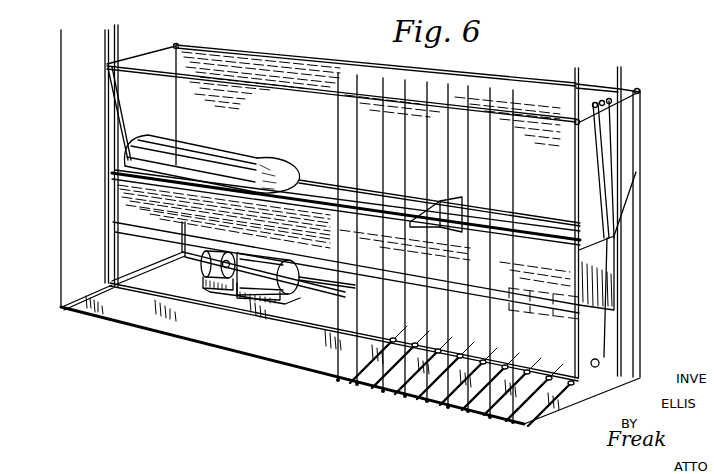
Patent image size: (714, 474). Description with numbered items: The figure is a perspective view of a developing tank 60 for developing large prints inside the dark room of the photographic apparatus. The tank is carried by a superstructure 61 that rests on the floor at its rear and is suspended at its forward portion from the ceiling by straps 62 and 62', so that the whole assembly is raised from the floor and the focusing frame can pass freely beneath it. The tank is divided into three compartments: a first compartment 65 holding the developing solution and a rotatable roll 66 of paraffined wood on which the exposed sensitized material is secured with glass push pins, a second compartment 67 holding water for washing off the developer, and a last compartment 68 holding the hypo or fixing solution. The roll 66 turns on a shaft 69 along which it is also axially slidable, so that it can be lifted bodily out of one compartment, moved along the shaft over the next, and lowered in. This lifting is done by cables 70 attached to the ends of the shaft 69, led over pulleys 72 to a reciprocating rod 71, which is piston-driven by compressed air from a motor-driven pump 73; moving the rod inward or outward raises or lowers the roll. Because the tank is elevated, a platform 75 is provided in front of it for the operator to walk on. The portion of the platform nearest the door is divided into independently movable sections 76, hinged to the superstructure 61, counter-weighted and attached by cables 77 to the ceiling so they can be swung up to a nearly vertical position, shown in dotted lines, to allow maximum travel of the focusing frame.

The developing tank 60 is at (648, 136).
The superstructure 61 is at (312, 90).
The strap 62 is at (393, 196).
The strap 62' is at (329, 202).
The first compartment 65 is at (297, 160).
The rotatable roll 66 is at (237, 157).
The second compartment 67 is at (373, 187).
The last compartment 68 is at (537, 217).
The shaft 69 is at (562, 230).
The cables 70 is at (128, 97).
The reciprocating rod 71 is at (317, 290).
The pulleys 72 is at (592, 105).
The motor-driven pump 73 is at (238, 312).
The platform 75 is at (153, 330).
The independently movable sections 76 is at (425, 400).
The cables 77 is at (88, 140).